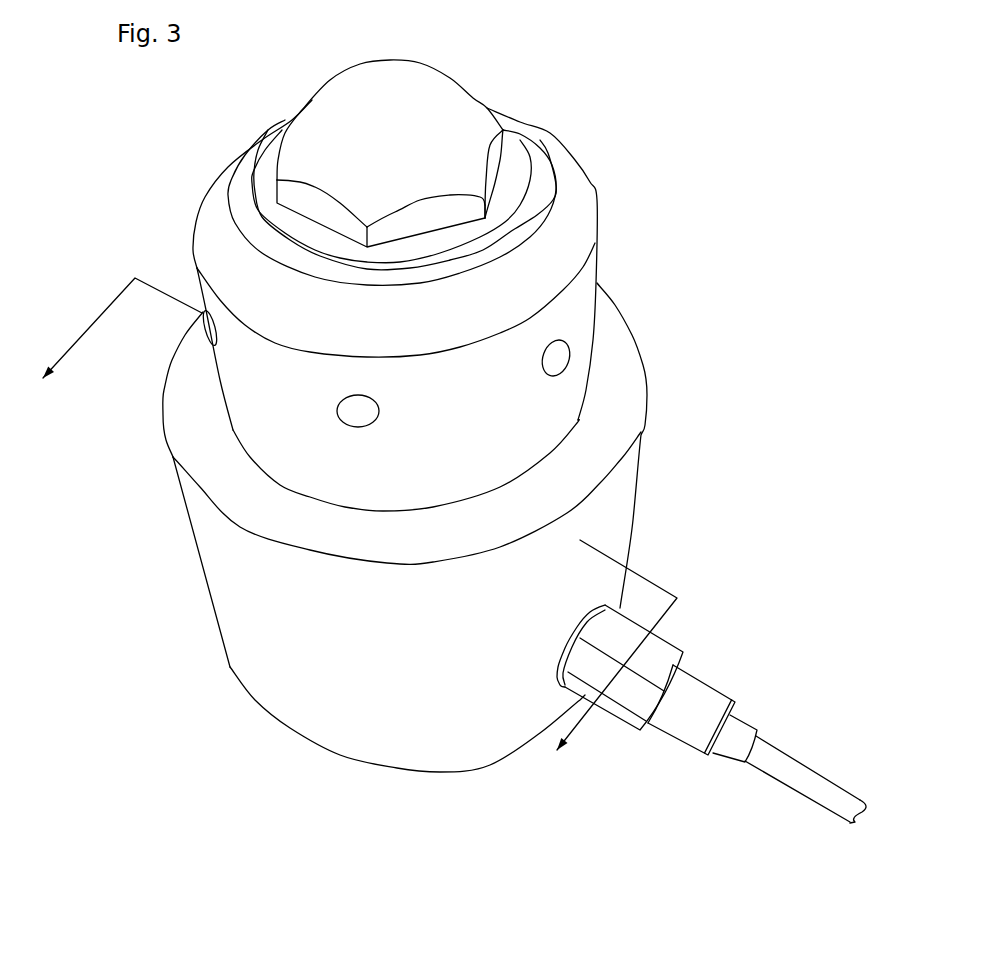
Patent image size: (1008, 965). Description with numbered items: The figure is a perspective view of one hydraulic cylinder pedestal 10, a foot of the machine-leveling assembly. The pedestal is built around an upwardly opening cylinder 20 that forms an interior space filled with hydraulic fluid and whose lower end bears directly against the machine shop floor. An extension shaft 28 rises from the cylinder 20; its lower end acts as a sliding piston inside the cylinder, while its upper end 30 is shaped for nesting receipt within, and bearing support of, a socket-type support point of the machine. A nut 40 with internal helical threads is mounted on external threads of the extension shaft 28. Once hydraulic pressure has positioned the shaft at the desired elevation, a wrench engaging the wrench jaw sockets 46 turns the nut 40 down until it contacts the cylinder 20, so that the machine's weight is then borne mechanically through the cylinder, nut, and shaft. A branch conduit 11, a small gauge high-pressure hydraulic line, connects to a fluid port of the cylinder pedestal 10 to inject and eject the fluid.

The cylinder pedestal 10 is at (530, 113).
The branch conduit 11 is at (797, 778).
The cylinder 20 is at (273, 618).
The extension shaft 28 is at (433, 215).
The upper end 30 is at (427, 115).
The nut 40 is at (573, 328).
The wrench jaw sockets 46 is at (560, 360).